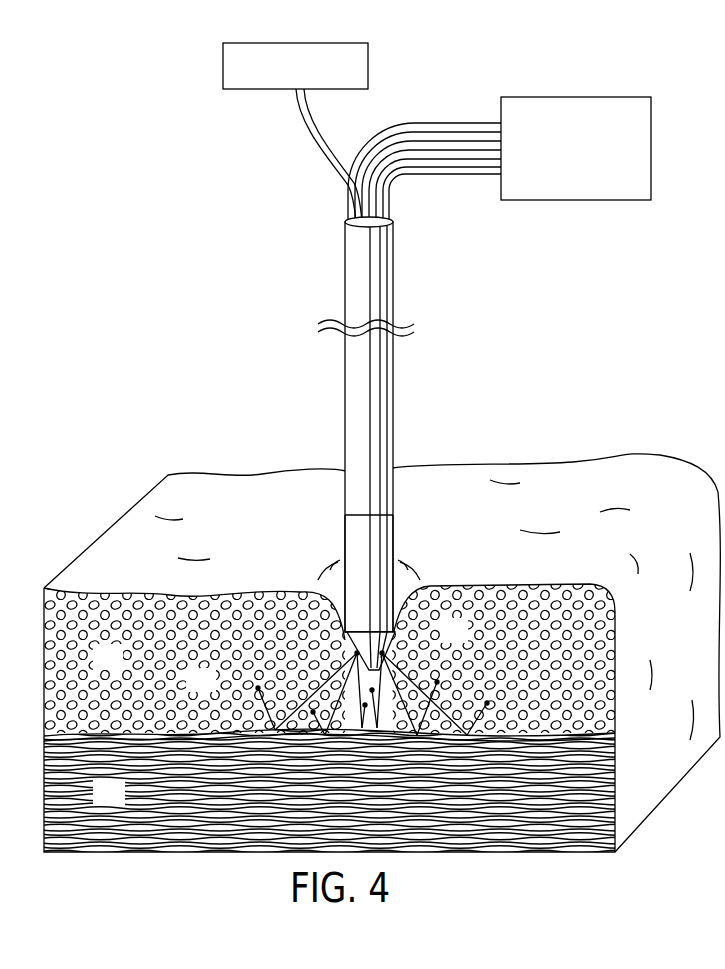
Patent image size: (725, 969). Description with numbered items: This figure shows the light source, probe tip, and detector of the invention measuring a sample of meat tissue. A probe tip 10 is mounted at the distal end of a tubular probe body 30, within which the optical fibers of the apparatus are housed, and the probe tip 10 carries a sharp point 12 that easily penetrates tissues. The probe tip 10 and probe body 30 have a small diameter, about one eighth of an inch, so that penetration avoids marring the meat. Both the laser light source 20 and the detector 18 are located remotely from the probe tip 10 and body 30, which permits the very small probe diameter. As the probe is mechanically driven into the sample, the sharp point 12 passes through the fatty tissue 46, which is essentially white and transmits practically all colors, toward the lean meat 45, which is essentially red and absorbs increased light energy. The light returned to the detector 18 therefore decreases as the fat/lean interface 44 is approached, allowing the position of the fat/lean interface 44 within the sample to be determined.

The probe tip 10 is at (355, 528).
The sharp point 12 is at (393, 640).
The detector 18 is at (368, 53).
The laser light source 20 is at (611, 200).
The tubular probe body 30 is at (353, 378).
The fat/lean interface 44 is at (185, 727).
The lean meat 45 is at (119, 803).
The fatty tissue 46 is at (119, 668).